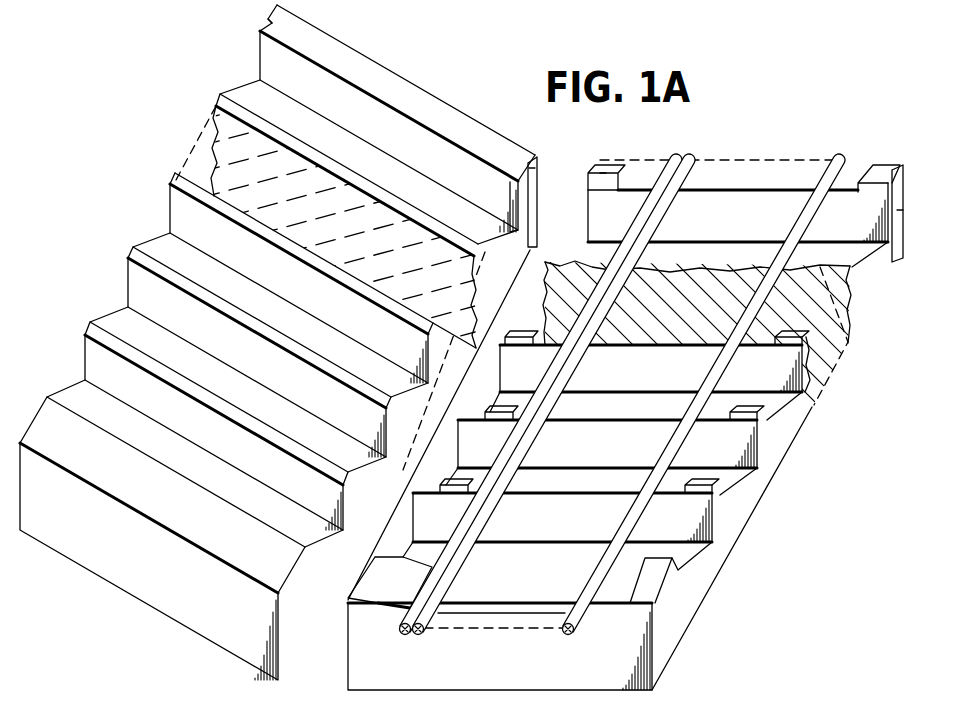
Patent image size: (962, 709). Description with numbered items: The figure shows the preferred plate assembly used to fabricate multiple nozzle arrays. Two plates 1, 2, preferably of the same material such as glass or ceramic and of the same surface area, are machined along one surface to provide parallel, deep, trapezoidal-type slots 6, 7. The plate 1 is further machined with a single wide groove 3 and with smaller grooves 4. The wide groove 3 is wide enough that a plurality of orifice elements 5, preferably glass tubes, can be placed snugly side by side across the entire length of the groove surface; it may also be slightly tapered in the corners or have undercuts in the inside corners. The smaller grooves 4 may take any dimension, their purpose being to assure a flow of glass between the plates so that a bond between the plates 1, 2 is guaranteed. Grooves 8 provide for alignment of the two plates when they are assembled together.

The plate 1 is at (680, 618).
The plate 2 is at (100, 555).
The wide groove 3 is at (446, 616).
The smaller grooves 4 is at (383, 610).
The orifice elements 5 is at (400, 634).
The trapezoidal-type slot 6 is at (870, 258).
The trapezoidal-type slot 7 is at (540, 238).
The alignment grooves 8 is at (268, 16).